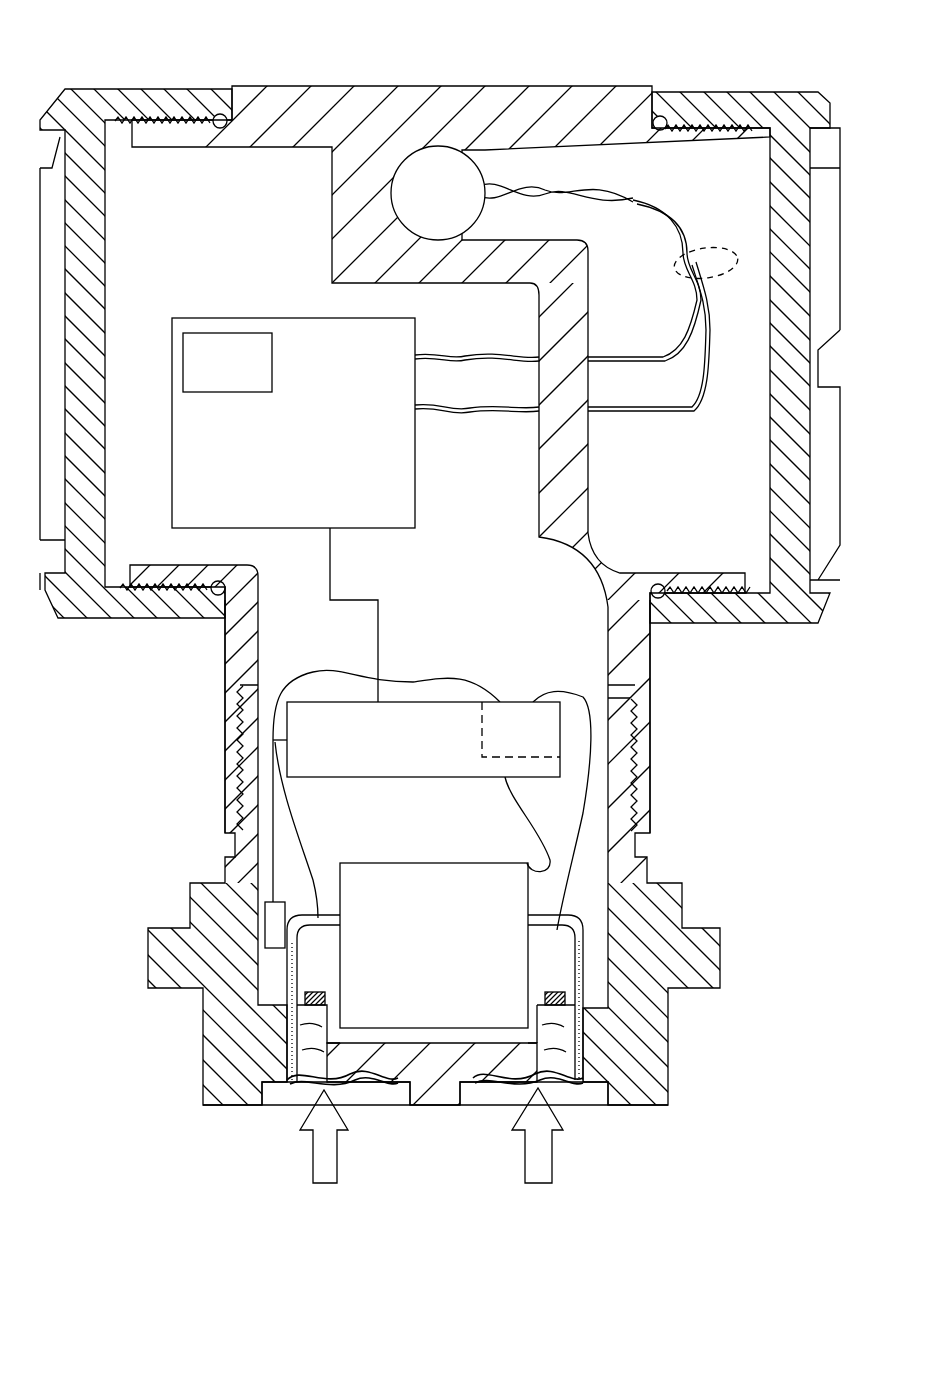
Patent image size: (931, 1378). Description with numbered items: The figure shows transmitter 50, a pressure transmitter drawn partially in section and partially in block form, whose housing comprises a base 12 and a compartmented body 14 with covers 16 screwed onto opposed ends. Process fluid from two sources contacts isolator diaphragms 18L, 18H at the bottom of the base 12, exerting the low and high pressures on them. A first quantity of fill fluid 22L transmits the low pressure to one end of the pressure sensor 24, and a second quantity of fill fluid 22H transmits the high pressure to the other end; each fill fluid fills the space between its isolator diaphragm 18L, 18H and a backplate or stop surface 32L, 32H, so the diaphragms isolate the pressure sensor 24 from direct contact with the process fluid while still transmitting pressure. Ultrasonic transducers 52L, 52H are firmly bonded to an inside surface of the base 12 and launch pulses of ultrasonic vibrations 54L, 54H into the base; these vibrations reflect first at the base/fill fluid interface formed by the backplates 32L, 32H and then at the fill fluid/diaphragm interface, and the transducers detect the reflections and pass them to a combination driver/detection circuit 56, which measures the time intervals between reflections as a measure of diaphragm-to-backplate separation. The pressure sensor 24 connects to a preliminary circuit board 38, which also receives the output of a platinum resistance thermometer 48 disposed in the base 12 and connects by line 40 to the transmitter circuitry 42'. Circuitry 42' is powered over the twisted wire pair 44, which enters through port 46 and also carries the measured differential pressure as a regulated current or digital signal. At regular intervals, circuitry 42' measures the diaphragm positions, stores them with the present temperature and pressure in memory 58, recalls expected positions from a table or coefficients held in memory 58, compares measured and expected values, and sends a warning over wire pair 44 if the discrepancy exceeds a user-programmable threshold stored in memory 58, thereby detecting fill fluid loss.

The transmitter 50 is at (222, 44).
The covers 16 is at (140, 97).
The compartmented body 14 is at (505, 93).
The base 12 is at (674, 889).
The isolator diaphragm 18L is at (291, 1082).
The isolator diaphragm 18H is at (577, 1083).
The backplate or stop surface 32L is at (353, 1072).
The backplate or stop surface 32H is at (511, 1064).
The fill fluid 22L is at (287, 1015).
The fill fluid 22H is at (585, 1012).
The ultrasonic waves or vibrations 54L is at (290, 1048).
The ultrasonic waves or vibrations 54H is at (580, 1052).
The ultrasonic transducer 52L is at (322, 992).
The ultrasonic transducer 52H is at (550, 993).
The pressure sensor 24 is at (434, 945).
The preliminary circuit board 38 is at (416, 739).
The driver/detection circuit 56 is at (521, 729).
The line 40 is at (378, 614).
The platinum resistance thermometer 48 is at (268, 920).
The circuitry 42' is at (293, 423).
The memory 58 is at (183, 360).
The twisted wire pair 44 is at (712, 281).
The port 46 is at (432, 180).